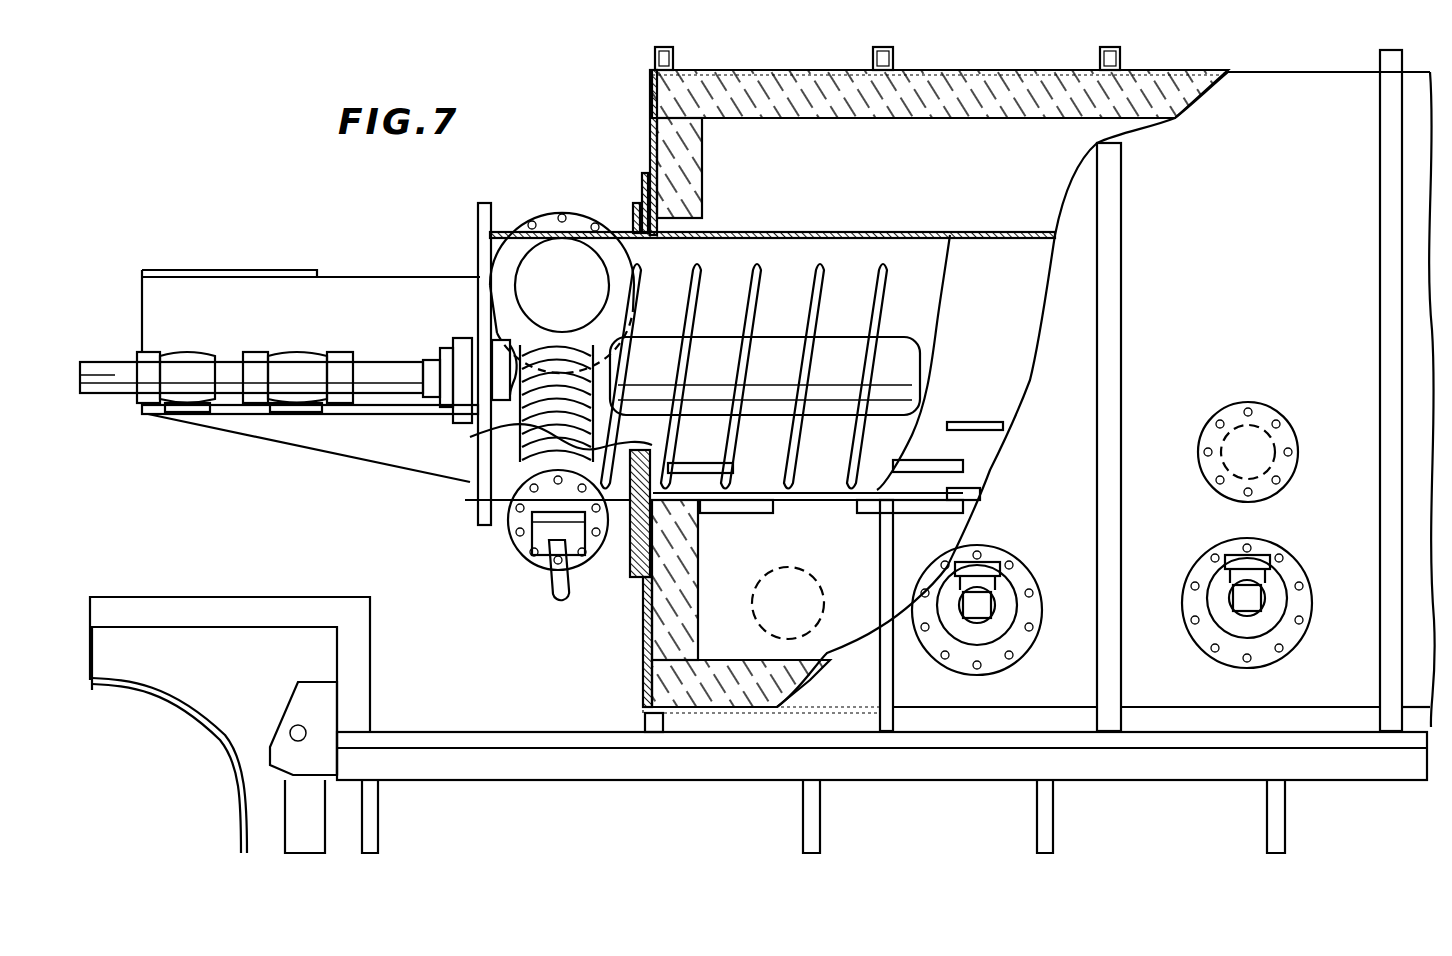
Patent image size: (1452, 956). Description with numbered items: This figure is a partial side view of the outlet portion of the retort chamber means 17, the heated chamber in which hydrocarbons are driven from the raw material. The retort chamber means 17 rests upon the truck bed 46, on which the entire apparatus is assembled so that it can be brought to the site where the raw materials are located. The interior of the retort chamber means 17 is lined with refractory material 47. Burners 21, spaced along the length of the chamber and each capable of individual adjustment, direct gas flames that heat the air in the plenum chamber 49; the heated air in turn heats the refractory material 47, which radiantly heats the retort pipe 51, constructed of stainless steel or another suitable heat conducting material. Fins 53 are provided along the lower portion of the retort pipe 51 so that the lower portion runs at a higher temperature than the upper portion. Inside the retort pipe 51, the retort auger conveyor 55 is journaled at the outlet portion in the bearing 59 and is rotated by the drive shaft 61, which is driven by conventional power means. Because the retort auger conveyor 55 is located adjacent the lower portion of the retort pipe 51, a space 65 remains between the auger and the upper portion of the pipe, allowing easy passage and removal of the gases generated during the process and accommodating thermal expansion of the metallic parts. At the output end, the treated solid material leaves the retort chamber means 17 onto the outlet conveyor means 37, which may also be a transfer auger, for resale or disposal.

The retort chamber means 17 is at (975, 70).
The burners 21 is at (997, 577).
The outlet conveyor means 37 is at (537, 422).
The truck bed 46 is at (515, 770).
The refractory material 47 is at (731, 103).
The plenum chamber 49 is at (845, 172).
The retort pipe 51 is at (913, 233).
The fins 53 is at (967, 497).
The retort auger conveyor 55 is at (763, 297).
The bearing 59 is at (467, 342).
The drive shaft 61 is at (380, 368).
The space 65 is at (736, 260).